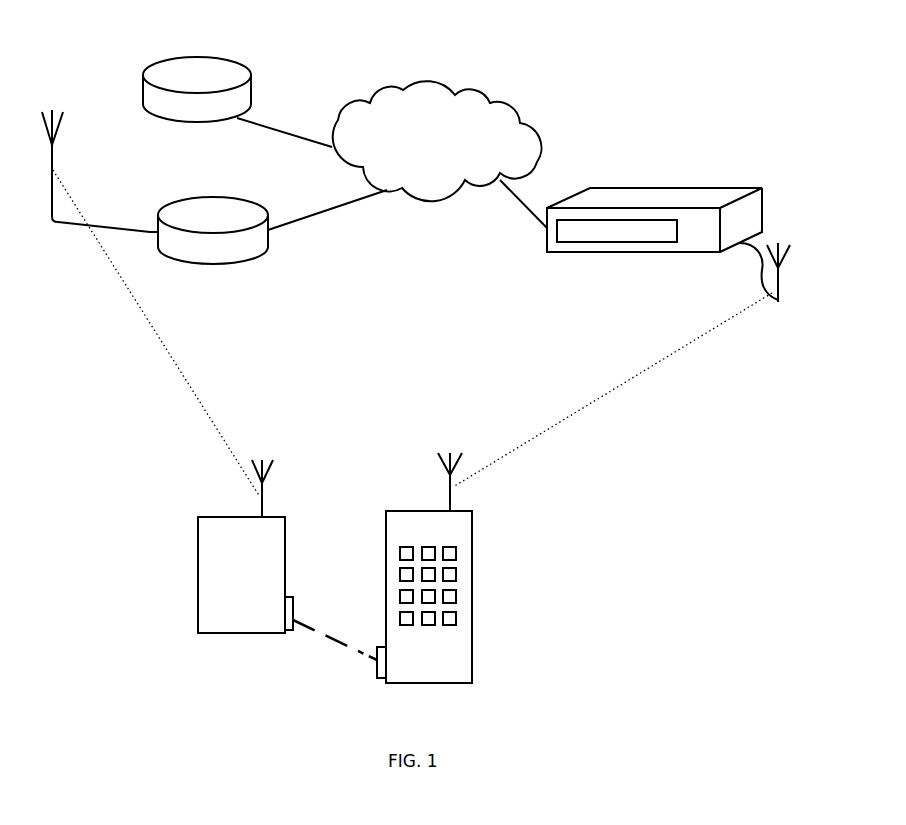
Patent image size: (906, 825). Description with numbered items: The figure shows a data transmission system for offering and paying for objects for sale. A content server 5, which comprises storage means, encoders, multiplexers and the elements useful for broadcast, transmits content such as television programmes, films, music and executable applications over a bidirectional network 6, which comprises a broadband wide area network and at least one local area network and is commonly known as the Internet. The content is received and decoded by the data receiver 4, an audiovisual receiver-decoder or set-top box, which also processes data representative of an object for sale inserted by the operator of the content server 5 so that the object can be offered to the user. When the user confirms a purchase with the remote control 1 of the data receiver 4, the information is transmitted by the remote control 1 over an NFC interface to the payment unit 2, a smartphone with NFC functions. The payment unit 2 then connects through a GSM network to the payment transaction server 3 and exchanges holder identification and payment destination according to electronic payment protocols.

The remote control 1 is at (465, 543).
The payment unit 2 is at (78, 540).
The payment transaction server 3 is at (247, 250).
The data receiver 4 is at (688, 150).
The content server 5 is at (233, 68).
The network 6 is at (402, 150).